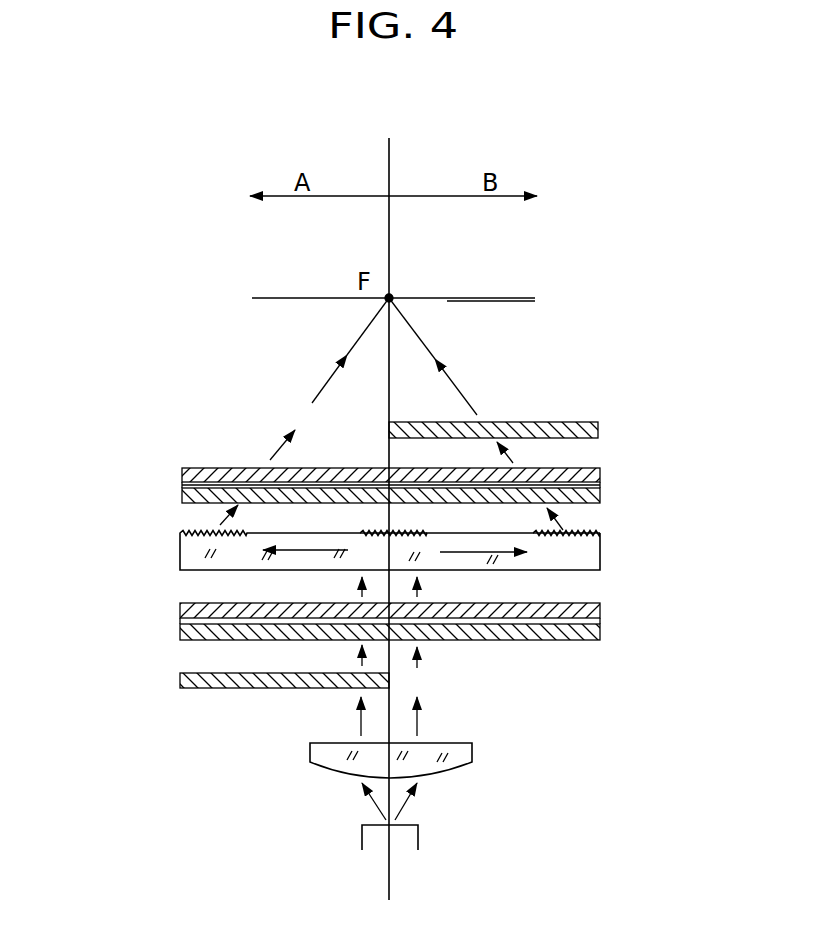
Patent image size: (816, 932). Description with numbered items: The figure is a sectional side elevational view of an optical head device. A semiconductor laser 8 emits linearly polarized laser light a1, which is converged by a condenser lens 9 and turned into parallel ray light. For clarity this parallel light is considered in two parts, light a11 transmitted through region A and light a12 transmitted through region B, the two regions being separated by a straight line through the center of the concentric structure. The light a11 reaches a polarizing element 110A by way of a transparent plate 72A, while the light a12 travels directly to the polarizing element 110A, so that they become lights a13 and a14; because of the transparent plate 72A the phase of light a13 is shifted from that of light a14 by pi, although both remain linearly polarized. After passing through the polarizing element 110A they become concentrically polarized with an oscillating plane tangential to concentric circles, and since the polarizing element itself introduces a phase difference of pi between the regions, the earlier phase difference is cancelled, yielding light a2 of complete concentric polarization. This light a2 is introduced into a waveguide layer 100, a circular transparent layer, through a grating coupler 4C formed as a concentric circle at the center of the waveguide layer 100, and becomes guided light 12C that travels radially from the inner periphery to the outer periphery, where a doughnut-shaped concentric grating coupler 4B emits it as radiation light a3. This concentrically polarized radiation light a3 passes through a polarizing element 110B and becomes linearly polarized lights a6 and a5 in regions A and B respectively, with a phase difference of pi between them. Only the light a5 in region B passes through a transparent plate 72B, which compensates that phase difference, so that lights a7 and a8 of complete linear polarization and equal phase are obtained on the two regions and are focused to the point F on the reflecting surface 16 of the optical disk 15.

The optical disk 15 is at (490, 298).
The reflective surface 16 is at (447, 302).
The transparent plate 72B is at (598, 424).
The polarizing element 110B is at (182, 481).
The guided light 12C is at (305, 547).
The waveguide layer 100 is at (600, 553).
The grating coupler 4C is at (380, 533).
The concentric grating coupler 4B is at (578, 535).
The polarizing element 110A is at (600, 625).
The transparent plate 72A is at (180, 680).
The condenser lens 9 is at (474, 750).
The semiconductor laser 8 is at (420, 835).
The laser light a1 is at (376, 805).
The light of complete concentric polarization a2 is at (362, 593).
The radiation light a3 is at (220, 525).
The light of linear polarization a5 is at (513, 462).
The light of linear polarization a6 is at (283, 445).
The light of complete linear polarization a7 is at (466, 400).
The light of complete linear polarization a8 is at (330, 380).
The light transmitted through region A a11 is at (356, 718).
The light transmitted through region B a12 is at (423, 718).
The light a13 is at (358, 658).
The light a14 is at (423, 662).